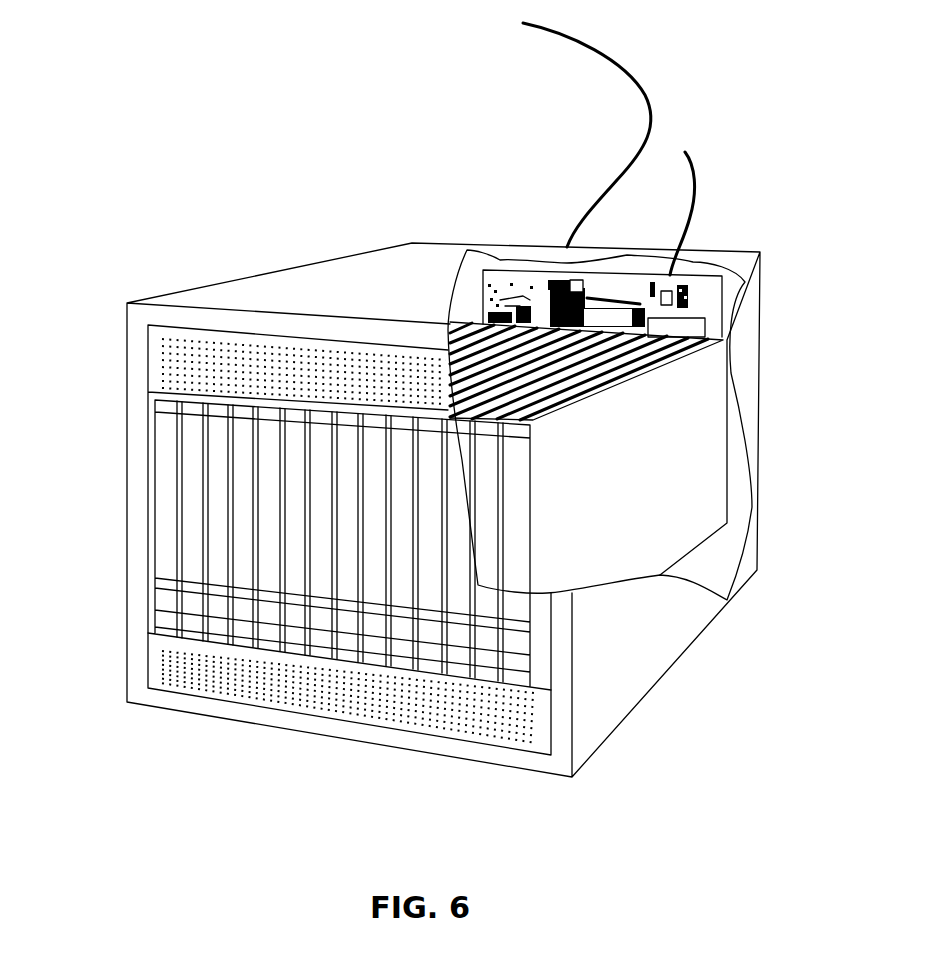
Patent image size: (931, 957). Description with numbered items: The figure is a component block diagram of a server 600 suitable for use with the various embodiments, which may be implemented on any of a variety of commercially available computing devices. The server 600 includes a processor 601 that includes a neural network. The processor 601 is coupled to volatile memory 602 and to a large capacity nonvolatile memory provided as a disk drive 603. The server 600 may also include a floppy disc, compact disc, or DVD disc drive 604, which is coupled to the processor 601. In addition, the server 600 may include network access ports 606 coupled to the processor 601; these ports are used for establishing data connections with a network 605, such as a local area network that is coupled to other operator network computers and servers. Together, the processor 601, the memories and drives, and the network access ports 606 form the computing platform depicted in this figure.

The server 600 is at (320, 262).
The processor 601 is at (483, 318).
The volatile memory 602 is at (700, 327).
The disk drive 603 is at (218, 468).
The disc drive 604 is at (188, 507).
The network 605 is at (650, 107).
The network access ports 606 is at (170, 547).